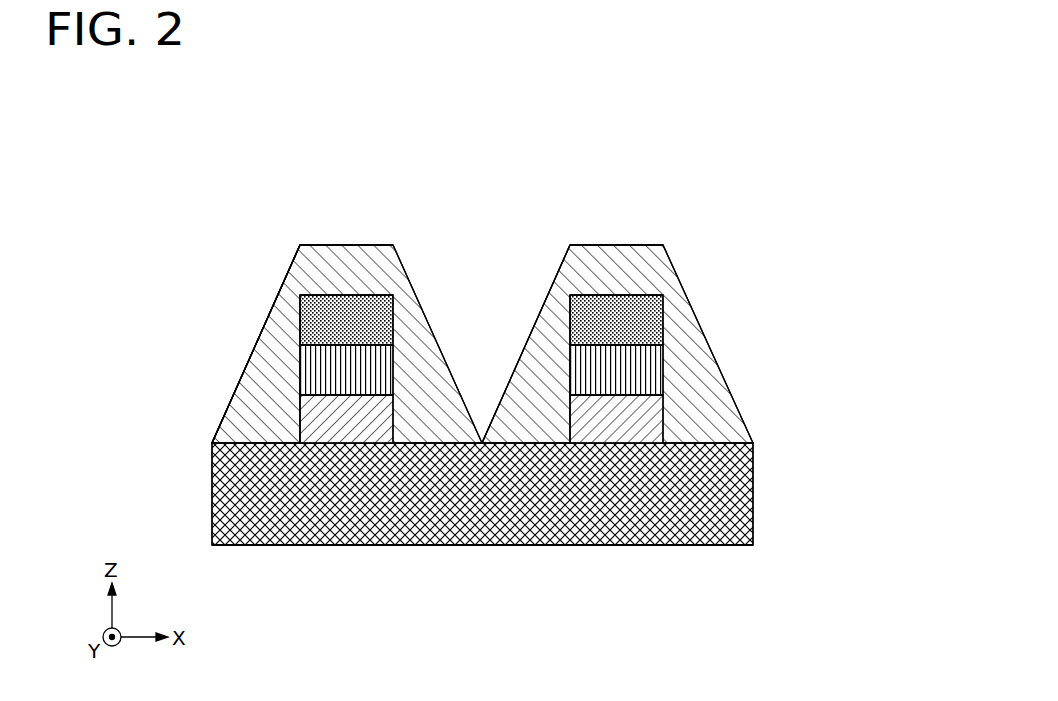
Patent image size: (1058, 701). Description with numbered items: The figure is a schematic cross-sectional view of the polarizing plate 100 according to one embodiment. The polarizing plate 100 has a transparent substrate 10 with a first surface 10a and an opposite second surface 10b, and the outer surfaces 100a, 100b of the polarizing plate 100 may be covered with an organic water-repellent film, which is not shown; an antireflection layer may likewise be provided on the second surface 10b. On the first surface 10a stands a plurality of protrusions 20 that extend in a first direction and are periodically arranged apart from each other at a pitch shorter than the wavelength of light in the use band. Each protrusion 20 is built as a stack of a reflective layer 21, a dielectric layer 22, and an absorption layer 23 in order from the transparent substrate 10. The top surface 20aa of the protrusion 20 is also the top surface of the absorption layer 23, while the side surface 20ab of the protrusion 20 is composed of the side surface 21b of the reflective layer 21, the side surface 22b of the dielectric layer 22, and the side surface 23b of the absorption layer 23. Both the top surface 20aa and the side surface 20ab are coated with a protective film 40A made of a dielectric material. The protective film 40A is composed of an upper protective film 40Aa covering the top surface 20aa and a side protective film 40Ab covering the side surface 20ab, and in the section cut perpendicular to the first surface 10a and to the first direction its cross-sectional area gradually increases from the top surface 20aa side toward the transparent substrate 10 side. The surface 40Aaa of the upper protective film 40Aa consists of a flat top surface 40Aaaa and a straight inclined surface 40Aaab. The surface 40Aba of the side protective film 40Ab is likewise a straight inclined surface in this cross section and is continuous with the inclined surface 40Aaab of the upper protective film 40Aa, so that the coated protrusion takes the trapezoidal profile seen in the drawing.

The polarizing plate 100 is at (815, 101).
The surface of the polarizing plate 100a is at (643, 246).
The surface of the polarizing plate 100b is at (712, 547).
The transparent substrate 10 is at (720, 497).
The first surface of the transparent substrate 10a is at (232, 442).
The second surface of the transparent substrate 10b is at (264, 547).
The protrusion 20 is at (642, 301).
The top surface of the protrusion 20aa is at (613, 293).
The side surface of the protrusion 20ab is at (583, 215).
The reflective layer 21 is at (645, 423).
The side surface of the reflective layer 21b is at (568, 415).
The dielectric layer 22 is at (645, 372).
The side surface of the dielectric layer 22b is at (568, 365).
The absorption layer 23 is at (642, 322).
The side surface of the absorption layer 23b is at (570, 320).
The protective film 40A is at (157, 238).
The upper protective film 40Aa is at (315, 282).
The side protective film 40Ab is at (282, 337).
The surface of the side protective film 40Aba is at (248, 357).
The surface of the upper protective film 40Aaa is at (397, 188).
The inclined surface of the upper protective film 40Aaab is at (292, 258).
The top surface of the upper protective film 40Aaaa is at (347, 246).